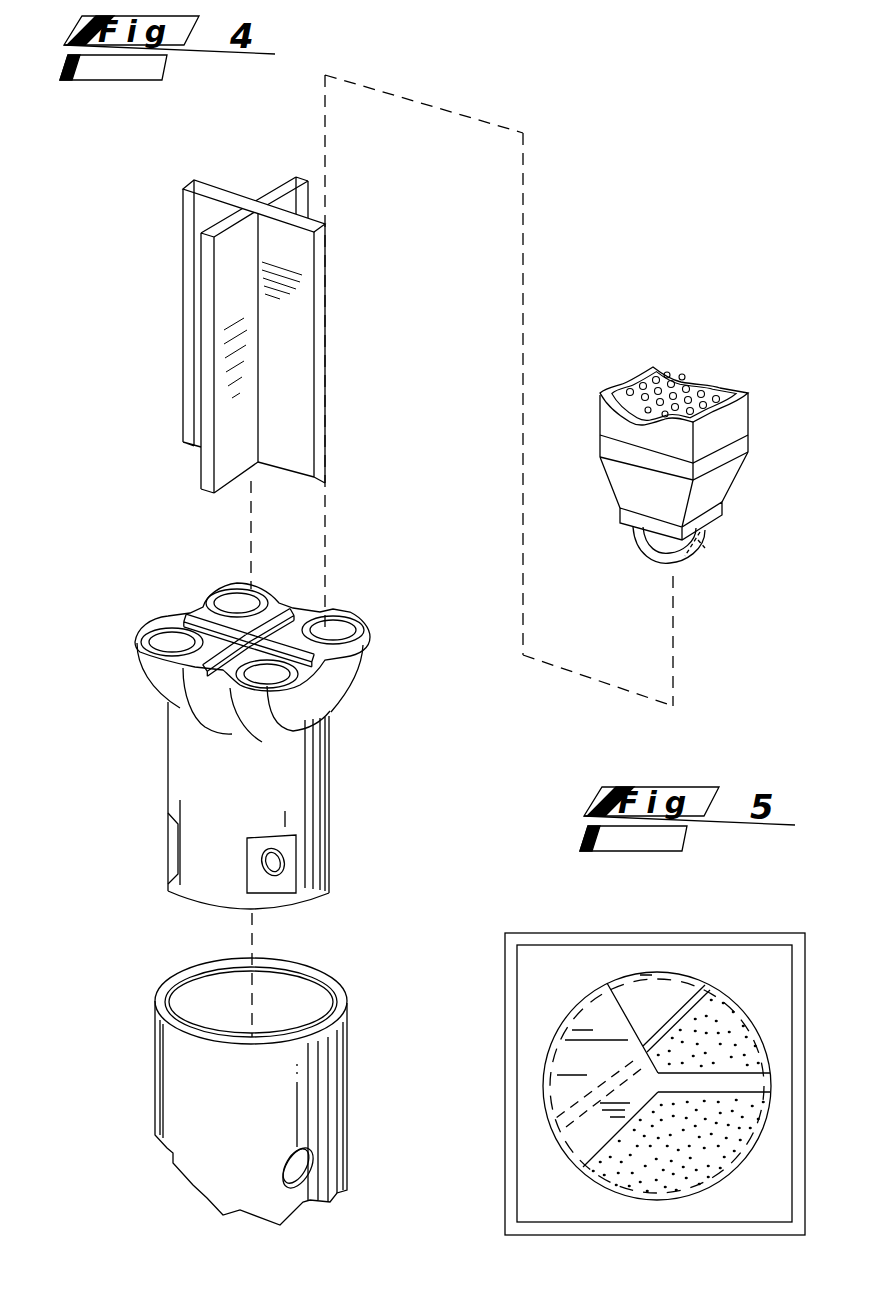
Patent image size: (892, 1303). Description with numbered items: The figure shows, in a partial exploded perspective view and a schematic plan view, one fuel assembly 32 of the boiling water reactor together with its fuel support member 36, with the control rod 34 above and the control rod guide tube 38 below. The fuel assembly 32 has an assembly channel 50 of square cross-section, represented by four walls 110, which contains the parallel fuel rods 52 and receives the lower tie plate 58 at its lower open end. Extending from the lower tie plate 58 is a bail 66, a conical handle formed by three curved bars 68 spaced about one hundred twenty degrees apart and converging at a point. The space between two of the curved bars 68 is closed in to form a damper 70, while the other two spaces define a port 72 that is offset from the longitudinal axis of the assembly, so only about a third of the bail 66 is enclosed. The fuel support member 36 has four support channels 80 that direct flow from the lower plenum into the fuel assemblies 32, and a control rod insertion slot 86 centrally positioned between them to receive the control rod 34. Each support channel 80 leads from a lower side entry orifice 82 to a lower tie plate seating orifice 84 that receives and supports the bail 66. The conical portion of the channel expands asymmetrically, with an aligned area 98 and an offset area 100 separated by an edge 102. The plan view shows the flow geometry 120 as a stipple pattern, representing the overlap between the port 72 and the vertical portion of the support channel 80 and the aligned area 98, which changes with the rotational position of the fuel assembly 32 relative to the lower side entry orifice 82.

In FIG. 4, the fuel assembly 32 is at (773, 452).
In FIG. 5, the fuel assembly 32 is at (812, 968).
In FIG. 4, the control rod 34 is at (136, 248).
In FIG. 4, the fuel support member 36 is at (140, 812).
In FIG. 4, the control rod guide tube 38 is at (143, 1057).
In FIG. 4, the assembly channel 50 is at (608, 450).
In FIG. 5, the assembly channel 50 is at (563, 918).
In FIG. 4, the fuel rods 52 is at (686, 397).
In FIG. 4, the lower tie plate 58 is at (721, 518).
In FIG. 5, the lower tie plate 58 is at (550, 1187).
In FIG. 4, the bail 66 is at (700, 560).
In FIG. 4, the curved bars 68 is at (635, 540).
In FIG. 5, the curved bars 68 is at (743, 1085).
In FIG. 4, the damper 70 is at (694, 562).
In FIG. 5, the damper 70 is at (593, 1073).
In FIG. 4, the port 72 is at (624, 561).
In FIG. 5, the port 72 is at (742, 1057).
In FIG. 4, the support channels 80 is at (235, 600).
In FIG. 4, the lower side entry orifice 82 is at (160, 842).
In FIG. 4, the lower tie plate seating orifice 84 is at (222, 594).
In FIG. 4, the control rod insertion slot 86 is at (209, 624).
In FIG. 5, the aligned area 98 is at (747, 1010).
In FIG. 5, the offset area 100 is at (645, 975).
In FIG. 5, the edge 102 is at (683, 1003).
In FIG. 5, the walls 110 is at (525, 933).
In FIG. 5, the flow geometry 120 is at (728, 1132).